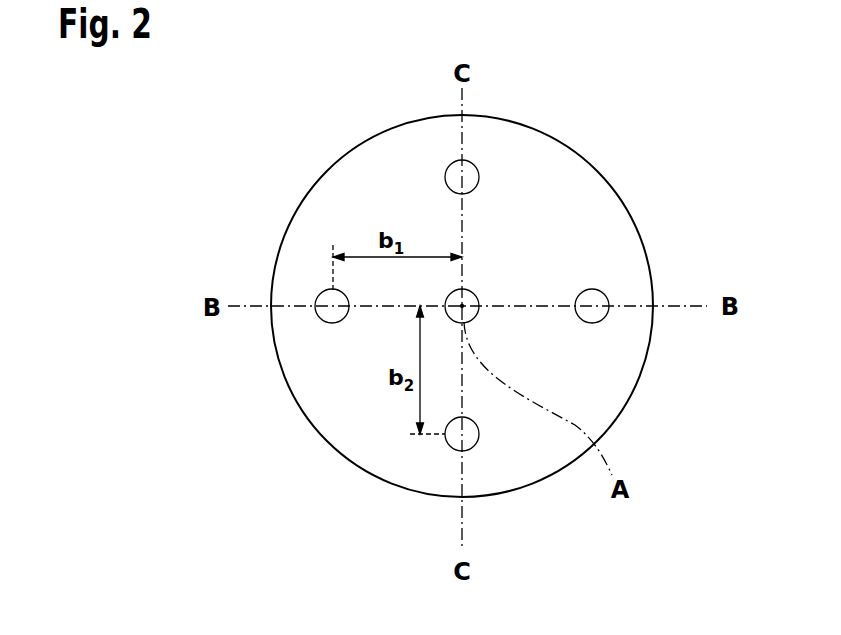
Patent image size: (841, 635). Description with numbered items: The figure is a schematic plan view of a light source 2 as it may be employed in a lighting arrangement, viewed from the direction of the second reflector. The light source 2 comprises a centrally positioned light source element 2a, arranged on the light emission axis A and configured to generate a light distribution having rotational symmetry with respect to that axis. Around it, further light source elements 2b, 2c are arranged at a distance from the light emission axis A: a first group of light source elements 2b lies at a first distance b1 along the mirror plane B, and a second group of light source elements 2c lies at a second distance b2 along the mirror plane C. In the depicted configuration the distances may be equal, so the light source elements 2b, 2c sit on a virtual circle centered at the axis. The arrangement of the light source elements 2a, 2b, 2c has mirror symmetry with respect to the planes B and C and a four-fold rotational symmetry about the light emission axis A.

The light source 2 is at (607, 160).
The central light source element 2a is at (484, 318).
The light source element 2b is at (317, 328).
The light source element 2c is at (443, 160).